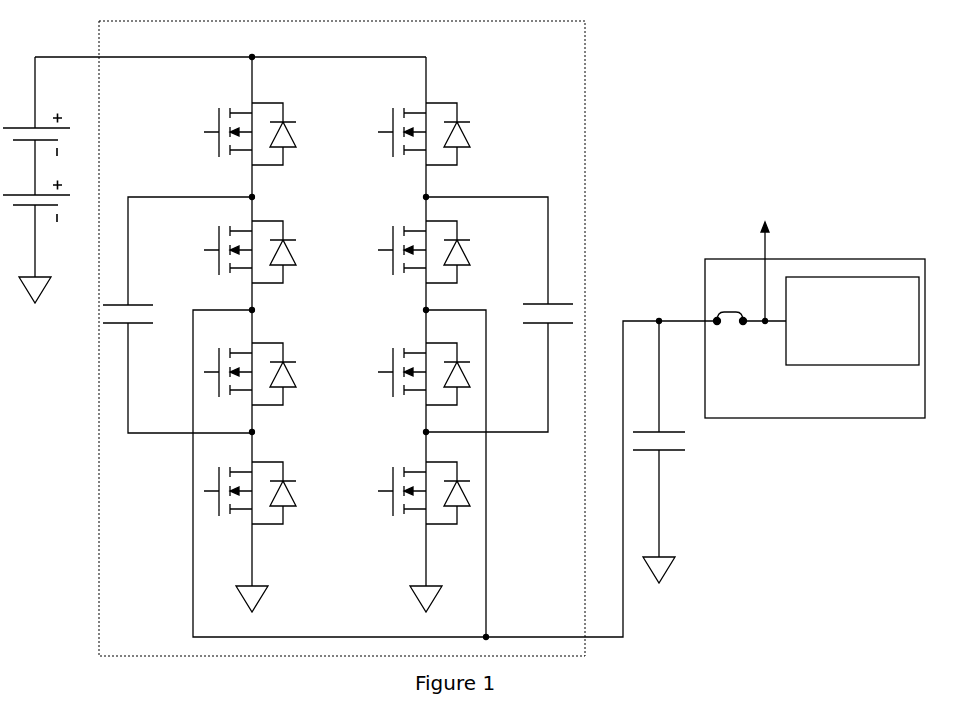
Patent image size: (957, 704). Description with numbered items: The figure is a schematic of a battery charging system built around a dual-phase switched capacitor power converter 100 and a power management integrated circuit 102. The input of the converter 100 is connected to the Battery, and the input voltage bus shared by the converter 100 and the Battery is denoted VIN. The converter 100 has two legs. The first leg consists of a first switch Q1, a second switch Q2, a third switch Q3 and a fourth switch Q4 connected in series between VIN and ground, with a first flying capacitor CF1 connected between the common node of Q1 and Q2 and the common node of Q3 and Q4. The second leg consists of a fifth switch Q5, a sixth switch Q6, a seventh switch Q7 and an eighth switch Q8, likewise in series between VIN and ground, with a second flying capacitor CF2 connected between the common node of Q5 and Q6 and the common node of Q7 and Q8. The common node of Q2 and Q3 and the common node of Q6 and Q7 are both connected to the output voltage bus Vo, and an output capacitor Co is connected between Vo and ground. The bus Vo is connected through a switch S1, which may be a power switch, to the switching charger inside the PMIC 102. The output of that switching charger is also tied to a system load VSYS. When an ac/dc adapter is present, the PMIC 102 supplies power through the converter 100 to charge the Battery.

The dual-phase switched capacitor power converter 100 is at (571, 53).
The power management integrated circuit (PMIC) 102 is at (826, 412).
The first switch Q1 is at (250, 144).
The second switch Q2 is at (250, 264).
The third switch Q3 is at (250, 382).
The fourth switch Q4 is at (250, 503).
The fifth switch Q5 is at (424, 144).
The sixth switch Q6 is at (424, 264).
The seventh switch Q7 is at (424, 382).
The eighth switch Q8 is at (424, 503).
The first flying capacitor CF1 is at (177, 315).
The second flying capacitor CF2 is at (499, 314).
The output capacitor Co is at (673, 452).
The switch S1 is at (745, 308).
The battery Battery is at (48, 180).
The input voltage bus VIN is at (341, 44).
The output voltage bus Vo is at (615, 312).
The system load VSYS is at (787, 271).